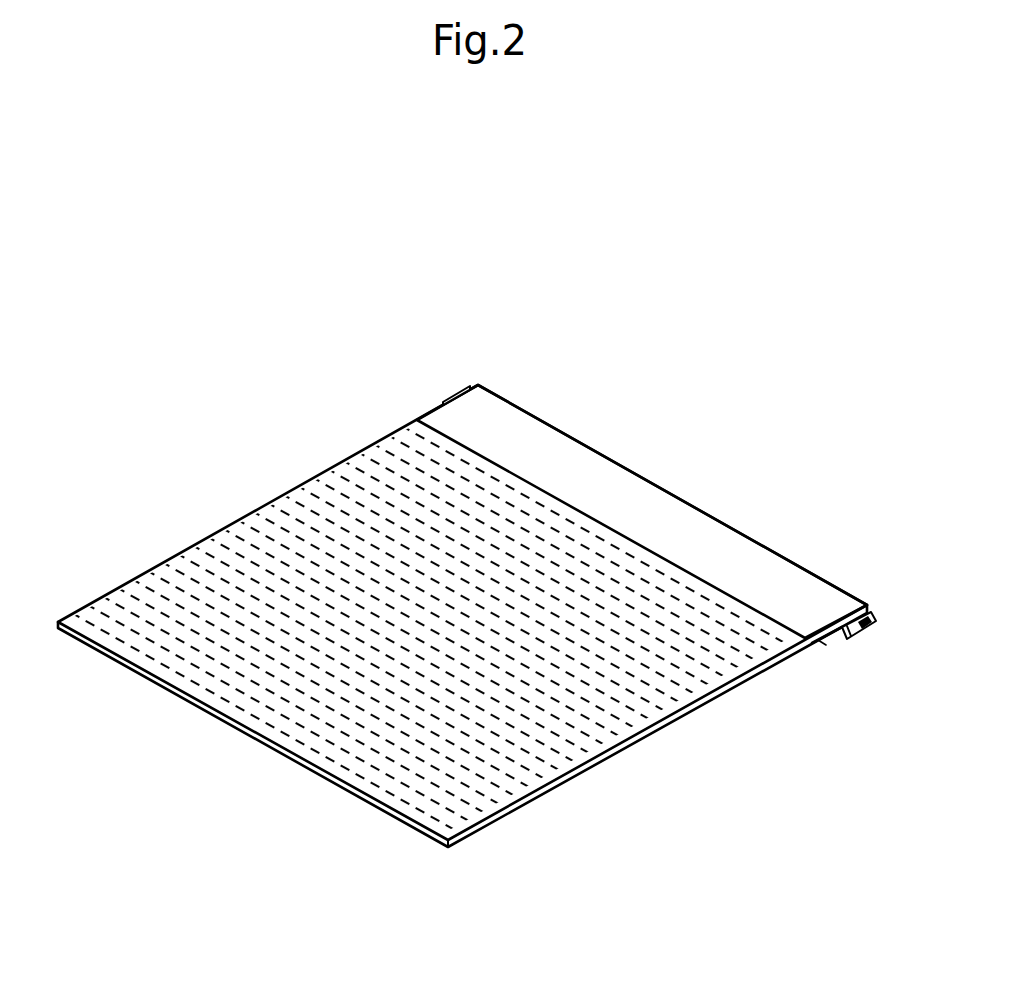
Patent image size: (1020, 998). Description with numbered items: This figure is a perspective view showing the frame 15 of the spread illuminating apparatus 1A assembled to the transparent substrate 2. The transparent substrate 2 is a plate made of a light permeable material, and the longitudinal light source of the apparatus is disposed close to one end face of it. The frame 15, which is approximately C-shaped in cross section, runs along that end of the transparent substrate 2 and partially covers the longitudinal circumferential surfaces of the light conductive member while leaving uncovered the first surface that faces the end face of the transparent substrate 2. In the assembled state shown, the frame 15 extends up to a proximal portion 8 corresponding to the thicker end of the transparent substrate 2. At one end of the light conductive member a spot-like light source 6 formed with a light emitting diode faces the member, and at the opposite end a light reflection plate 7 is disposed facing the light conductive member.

The spread illuminating apparatus 1A is at (683, 362).
The transparent substrate 2 is at (677, 707).
The frame 15 is at (710, 527).
The light reflection plate 7 is at (450, 400).
The spot-like light source 6 is at (877, 615).
The proximal portion 8 is at (825, 640).